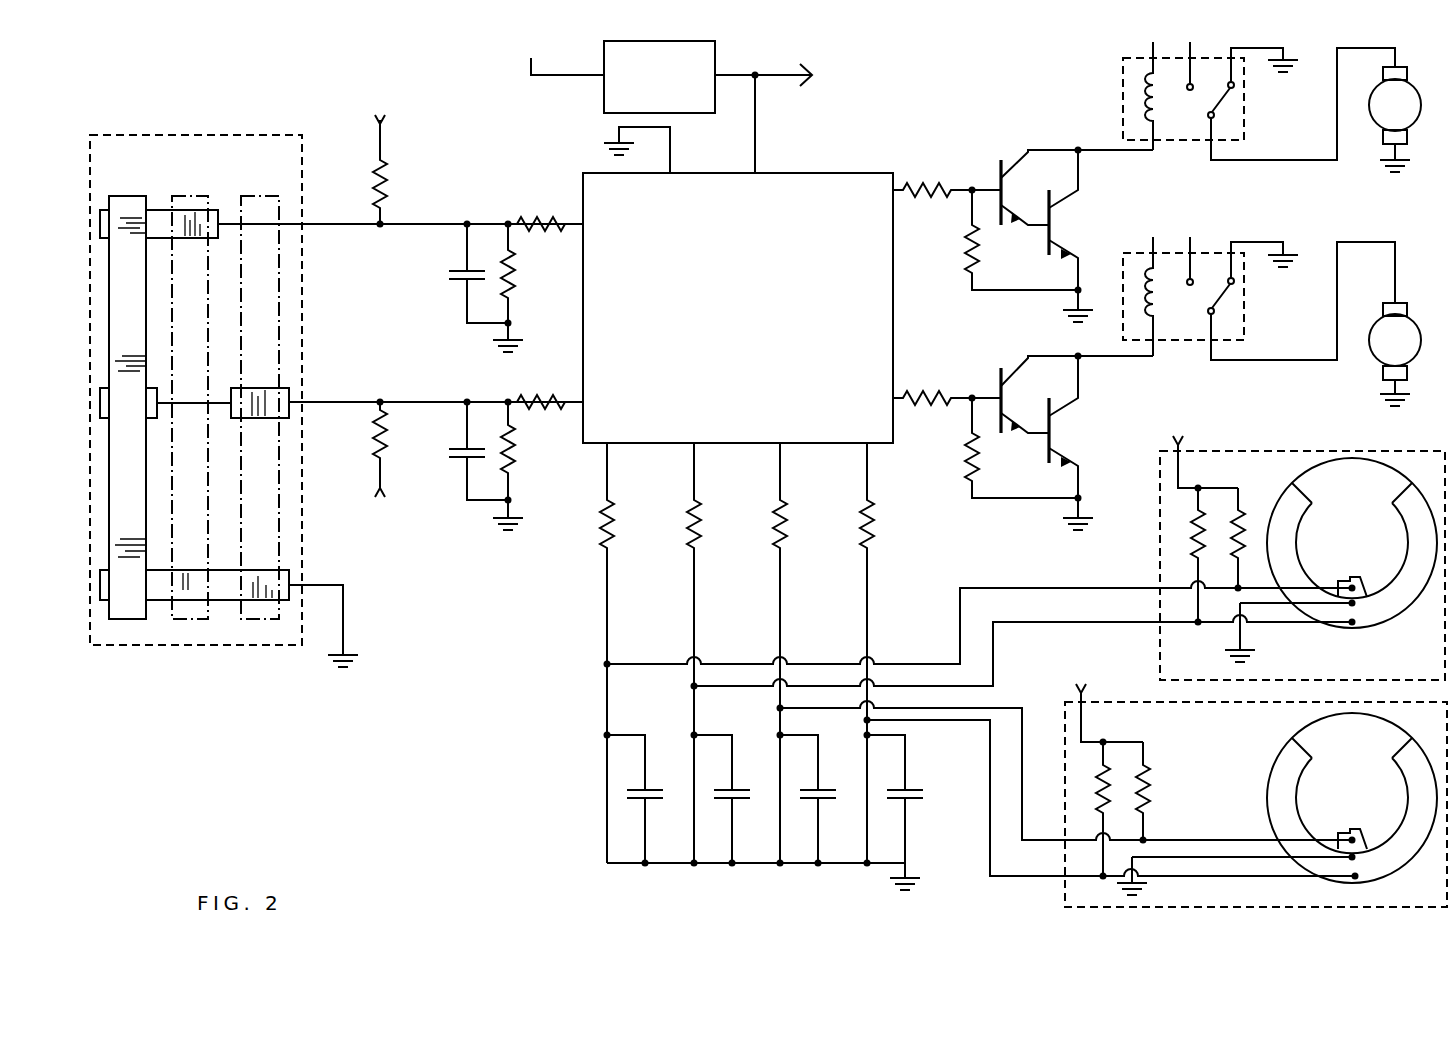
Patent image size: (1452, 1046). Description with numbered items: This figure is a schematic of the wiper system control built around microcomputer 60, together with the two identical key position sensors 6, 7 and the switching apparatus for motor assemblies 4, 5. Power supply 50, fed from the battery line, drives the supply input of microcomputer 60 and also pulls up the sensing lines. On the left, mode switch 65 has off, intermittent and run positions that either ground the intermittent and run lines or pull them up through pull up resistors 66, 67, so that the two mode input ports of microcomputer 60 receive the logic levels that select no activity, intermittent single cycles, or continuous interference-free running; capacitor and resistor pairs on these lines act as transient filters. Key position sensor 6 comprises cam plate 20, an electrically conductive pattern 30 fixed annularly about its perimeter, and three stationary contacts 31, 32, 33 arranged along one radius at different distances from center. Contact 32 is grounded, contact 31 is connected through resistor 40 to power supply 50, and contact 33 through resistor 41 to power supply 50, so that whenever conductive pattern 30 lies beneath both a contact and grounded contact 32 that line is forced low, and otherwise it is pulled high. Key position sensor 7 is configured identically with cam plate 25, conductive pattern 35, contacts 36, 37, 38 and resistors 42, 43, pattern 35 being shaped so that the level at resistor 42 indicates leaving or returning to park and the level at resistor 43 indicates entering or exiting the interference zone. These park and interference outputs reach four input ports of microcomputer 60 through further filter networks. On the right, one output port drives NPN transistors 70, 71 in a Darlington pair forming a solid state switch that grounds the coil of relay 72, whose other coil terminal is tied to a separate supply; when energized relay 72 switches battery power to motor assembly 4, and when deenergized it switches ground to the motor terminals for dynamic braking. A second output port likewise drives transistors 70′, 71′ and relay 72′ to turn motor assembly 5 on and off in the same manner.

The motor assembly 4 is at (1421, 108).
The motor assembly 5 is at (1418, 335).
The key position sensor 6 is at (1274, 536).
The key position sensor 7 is at (1224, 774).
The cam plate 20 is at (1355, 478).
The cam plate 25 is at (1328, 738).
The electrically conductive pattern 30 is at (1415, 561).
The contact 31 is at (1352, 580).
The contact 32 is at (1355, 605).
The contact 33 is at (1358, 623).
The electrically conductive pattern 35 is at (1417, 818).
The contact 36 is at (1355, 835).
The contact 37 is at (1355, 858).
The contact 38 is at (1357, 878).
The resistor 40 is at (1245, 530).
The resistor 41 is at (1195, 521).
The resistor 42 is at (1150, 806).
The resistor 43 is at (1095, 797).
The power supply 50 is at (712, 63).
The microcomputer 60 is at (811, 197).
The mode switch 65 is at (247, 643).
The pull up resistor 66 is at (373, 197).
The pull up resistor 67 is at (375, 450).
The NPN transistor 70 is at (1014, 172).
The NPN transistor 70′ is at (1019, 372).
The NPN transistor 71 is at (1062, 214).
The NPN transistor 71′ is at (1060, 432).
The relay 72 is at (1123, 100).
The relay 72′ is at (1123, 292).